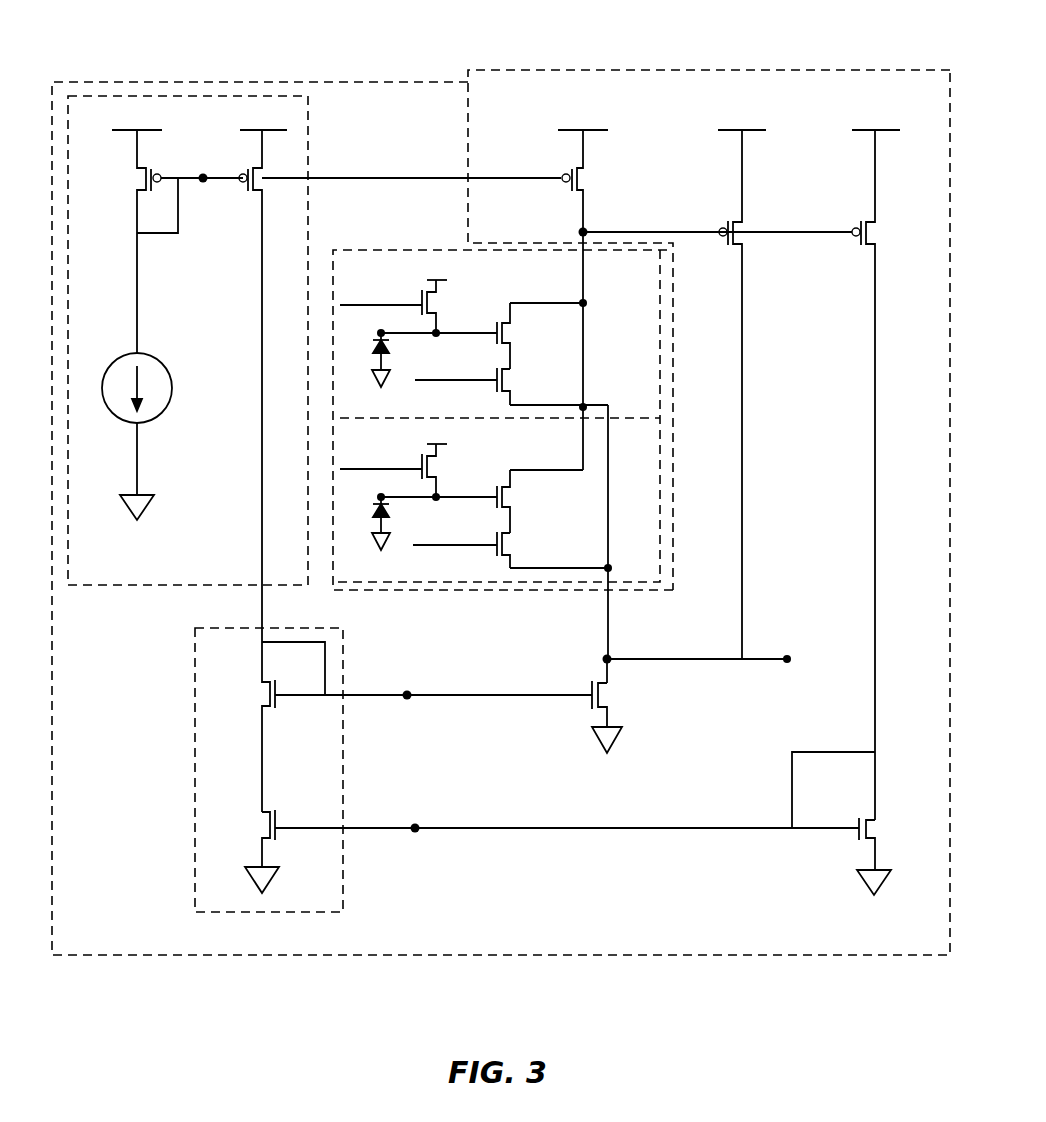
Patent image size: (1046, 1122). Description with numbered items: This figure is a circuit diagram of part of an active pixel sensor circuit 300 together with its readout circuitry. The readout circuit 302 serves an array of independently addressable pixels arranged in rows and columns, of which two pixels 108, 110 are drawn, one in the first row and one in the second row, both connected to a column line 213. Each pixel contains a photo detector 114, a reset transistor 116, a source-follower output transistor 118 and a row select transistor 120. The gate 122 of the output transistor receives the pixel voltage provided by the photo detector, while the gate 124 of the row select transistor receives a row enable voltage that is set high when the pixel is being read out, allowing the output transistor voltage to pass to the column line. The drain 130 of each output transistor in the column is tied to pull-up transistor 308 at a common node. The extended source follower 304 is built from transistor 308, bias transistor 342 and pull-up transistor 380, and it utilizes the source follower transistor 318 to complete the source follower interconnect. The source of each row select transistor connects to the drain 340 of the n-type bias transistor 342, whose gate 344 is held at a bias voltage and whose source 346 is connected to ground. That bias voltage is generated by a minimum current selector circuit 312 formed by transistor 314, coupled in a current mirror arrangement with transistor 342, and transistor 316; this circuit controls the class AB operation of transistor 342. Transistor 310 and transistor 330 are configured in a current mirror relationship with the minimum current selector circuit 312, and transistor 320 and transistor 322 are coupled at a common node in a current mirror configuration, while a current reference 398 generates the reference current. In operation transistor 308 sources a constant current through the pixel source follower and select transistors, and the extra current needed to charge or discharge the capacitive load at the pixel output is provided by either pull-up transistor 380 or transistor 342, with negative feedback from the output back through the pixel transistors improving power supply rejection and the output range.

The active pixel sensor circuit 300 is at (393, 92).
The readout circuit 302 is at (498, 955).
The extended source follower 304 is at (589, 103).
The pull-up transistor M4 308 is at (603, 157).
The transistor M7 310 is at (860, 213).
The minimum current selector circuit 312 is at (341, 773).
The transistor M2 314 is at (281, 707).
The transistor M3 316 is at (281, 840).
The transistor MSF 318 is at (147, 586).
The transistor M0 320 is at (147, 159).
The transistor M1 322 is at (252, 200).
The transistor M8 330 is at (857, 843).
The drain 340 is at (610, 676).
The bias transistor M5 342 is at (625, 706).
The gate 344 is at (588, 704).
The source 346 is at (611, 720).
The pull-up transistor M6 380 is at (727, 214).
The current reference 398 is at (160, 354).
The pixel 108 is at (375, 250).
The pixel 110 is at (333, 438).
The photo detector 114 is at (378, 523).
The reset transistor 116 is at (448, 296).
The source-follower output transistor MSF 118 is at (513, 418).
The row select transistor MR 120 is at (503, 466).
The gate 122 is at (497, 340).
The gate 124 is at (497, 388).
The drain 130 is at (512, 312).
The column output line 213 is at (609, 631).